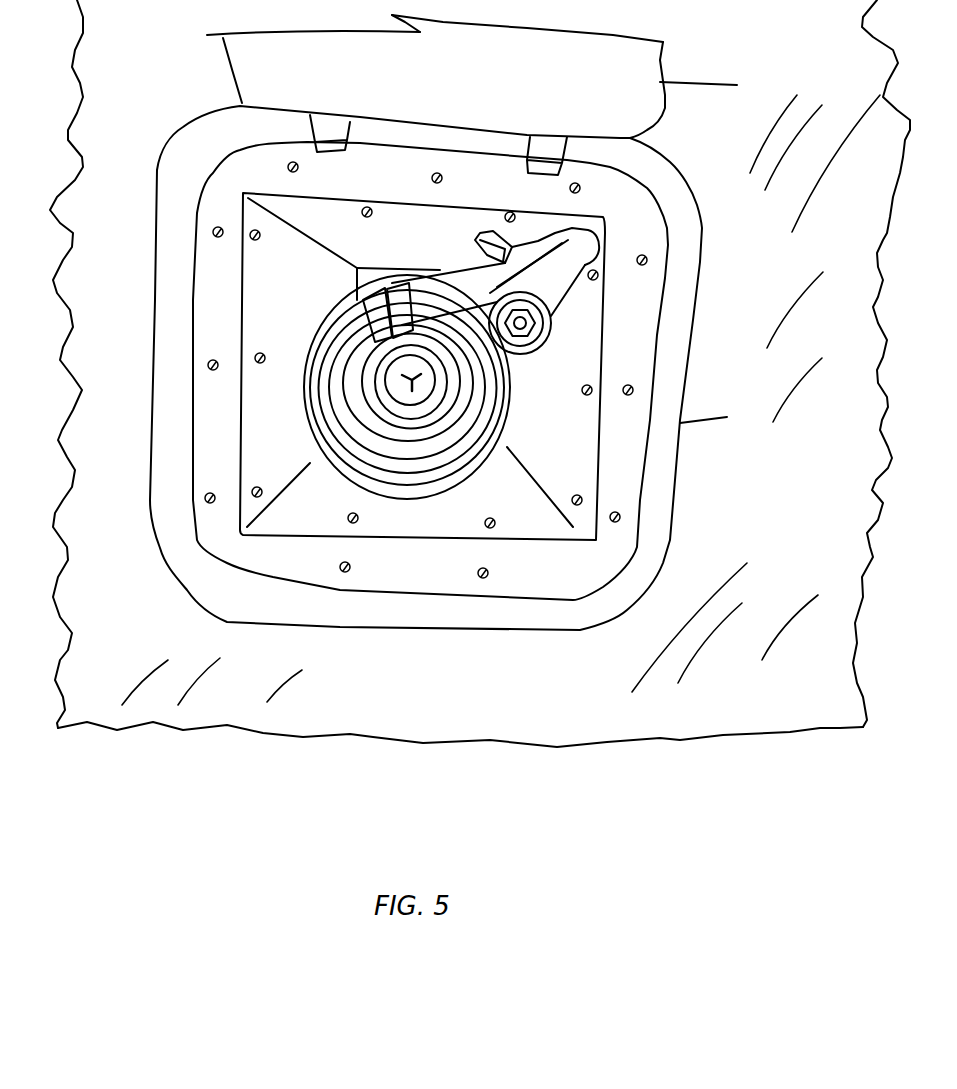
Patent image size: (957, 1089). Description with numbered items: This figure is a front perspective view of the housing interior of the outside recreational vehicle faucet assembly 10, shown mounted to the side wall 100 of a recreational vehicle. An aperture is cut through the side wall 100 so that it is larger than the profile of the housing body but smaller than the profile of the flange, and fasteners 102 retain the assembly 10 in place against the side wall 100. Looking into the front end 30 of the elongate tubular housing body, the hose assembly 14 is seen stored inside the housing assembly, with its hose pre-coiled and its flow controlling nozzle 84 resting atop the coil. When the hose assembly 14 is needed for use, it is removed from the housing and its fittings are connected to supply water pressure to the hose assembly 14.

The outside recreational vehicle faucet assembly 10 is at (443, 369).
The hose assembly 14 is at (444, 387).
The front end 30 is at (349, 409).
The flow controlling nozzle 84 is at (575, 296).
The side wall 100 is at (792, 502).
The fasteners 102 is at (612, 523).